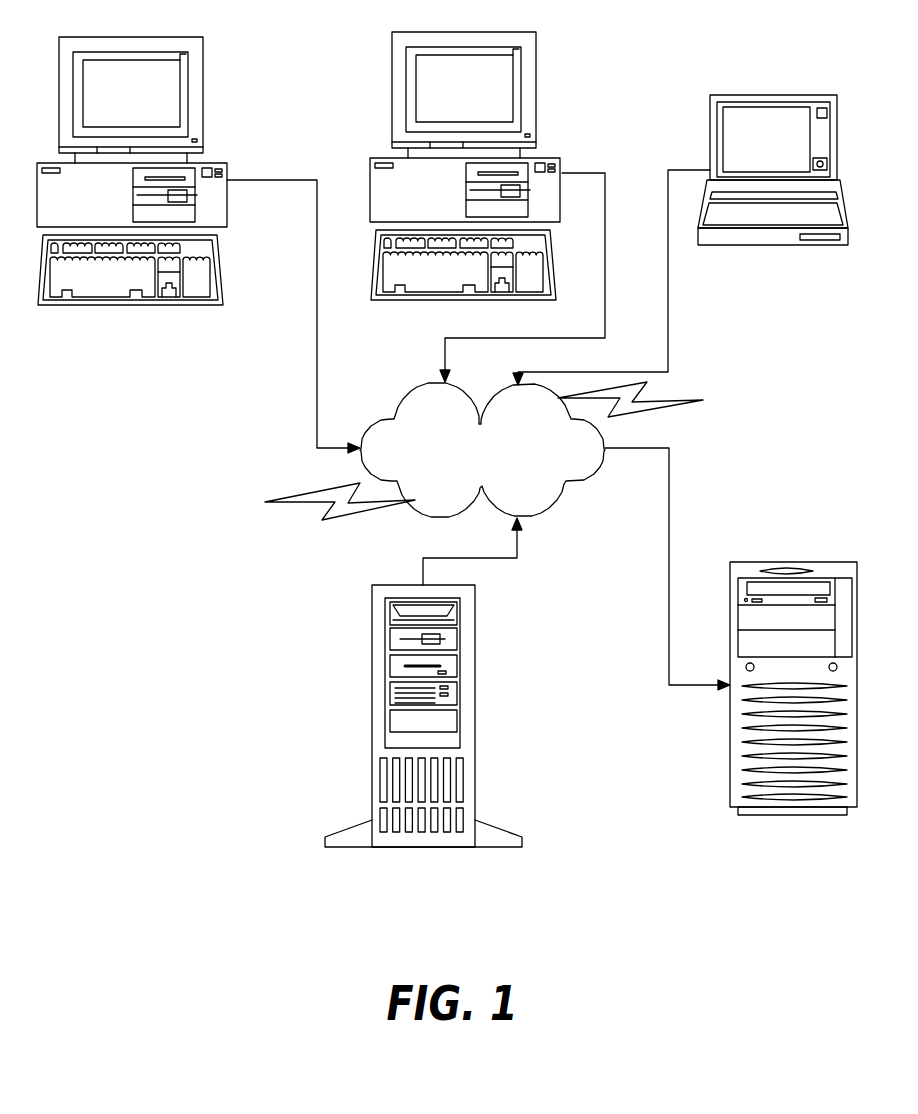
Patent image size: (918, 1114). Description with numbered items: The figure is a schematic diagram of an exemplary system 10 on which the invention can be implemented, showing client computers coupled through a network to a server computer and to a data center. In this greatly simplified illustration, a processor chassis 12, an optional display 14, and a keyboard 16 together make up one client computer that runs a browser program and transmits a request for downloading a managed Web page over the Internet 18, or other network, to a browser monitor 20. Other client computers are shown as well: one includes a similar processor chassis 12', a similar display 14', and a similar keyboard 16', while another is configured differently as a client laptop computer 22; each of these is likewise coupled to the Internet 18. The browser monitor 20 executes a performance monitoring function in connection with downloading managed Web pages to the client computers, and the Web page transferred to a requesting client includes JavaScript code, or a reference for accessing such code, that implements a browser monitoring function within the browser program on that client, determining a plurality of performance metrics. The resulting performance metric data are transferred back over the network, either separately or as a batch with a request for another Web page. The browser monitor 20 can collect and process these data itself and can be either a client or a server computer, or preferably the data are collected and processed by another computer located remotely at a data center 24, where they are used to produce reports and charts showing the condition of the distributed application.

The system 10 is at (457, 472).
The processor chassis 12 is at (160, 168).
The display 14 is at (162, 100).
The keyboard 16 is at (158, 270).
The processor chassis 12' is at (496, 163).
The display 14' is at (498, 95).
The keyboard 16' is at (501, 265).
The Internet 18 is at (552, 507).
The browser monitor 20 is at (475, 737).
The client laptop computer 22 is at (710, 137).
The data center 24 is at (730, 743).